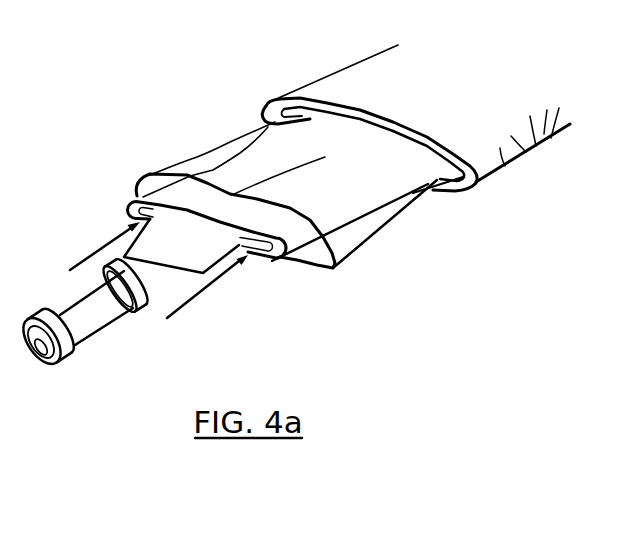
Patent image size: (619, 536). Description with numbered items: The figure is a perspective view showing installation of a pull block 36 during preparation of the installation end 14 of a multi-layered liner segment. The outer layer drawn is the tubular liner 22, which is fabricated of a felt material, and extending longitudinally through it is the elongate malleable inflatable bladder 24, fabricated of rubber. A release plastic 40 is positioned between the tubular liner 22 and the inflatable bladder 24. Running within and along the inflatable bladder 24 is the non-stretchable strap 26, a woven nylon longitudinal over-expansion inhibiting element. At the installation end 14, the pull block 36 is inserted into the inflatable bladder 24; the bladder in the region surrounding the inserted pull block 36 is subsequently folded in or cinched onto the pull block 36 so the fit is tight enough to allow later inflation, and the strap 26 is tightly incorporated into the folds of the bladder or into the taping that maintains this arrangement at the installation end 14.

The installation end 14 is at (205, 112).
The tubular liner 22 is at (536, 155).
The inflatable bladder 24 is at (297, 240).
The non-stretchable strap 26 is at (163, 248).
The pull block 36 is at (58, 366).
The release plastic 40 is at (358, 234).